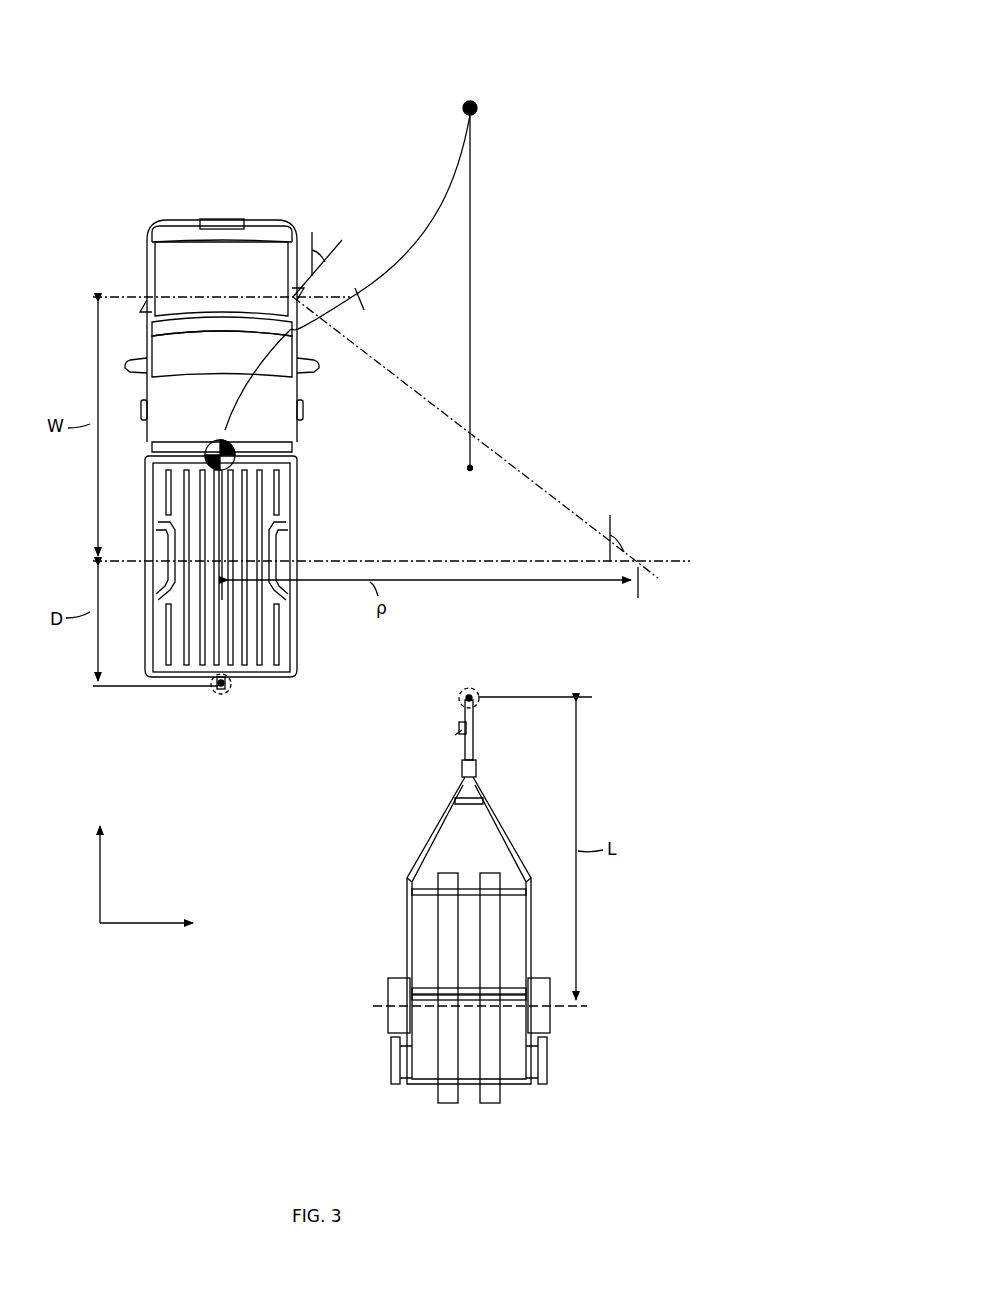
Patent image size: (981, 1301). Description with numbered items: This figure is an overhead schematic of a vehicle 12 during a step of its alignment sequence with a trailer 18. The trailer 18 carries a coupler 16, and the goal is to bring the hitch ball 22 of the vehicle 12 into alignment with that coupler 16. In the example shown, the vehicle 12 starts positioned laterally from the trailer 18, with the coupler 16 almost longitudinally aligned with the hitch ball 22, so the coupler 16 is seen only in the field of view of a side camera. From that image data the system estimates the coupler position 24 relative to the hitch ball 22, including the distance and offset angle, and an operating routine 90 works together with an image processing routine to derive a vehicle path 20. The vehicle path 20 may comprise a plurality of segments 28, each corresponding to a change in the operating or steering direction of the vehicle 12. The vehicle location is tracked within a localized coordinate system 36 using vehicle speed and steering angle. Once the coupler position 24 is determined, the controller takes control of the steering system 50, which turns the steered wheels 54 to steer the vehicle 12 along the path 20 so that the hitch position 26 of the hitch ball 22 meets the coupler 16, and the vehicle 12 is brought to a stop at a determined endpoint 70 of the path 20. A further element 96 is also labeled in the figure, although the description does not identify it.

The vehicle 12 is at (125, 223).
The coupler 16 is at (480, 703).
The trailer 18 is at (405, 926).
The vehicle path 20 is at (549, 58).
The hitch ball 22 is at (216, 688).
The coupler position 24 is at (480, 692).
The hitch position 26 is at (228, 694).
The segments 28 is at (420, 265).
The localized coordinate system 36 is at (148, 945).
The steering system 50 is at (318, 322).
The steered wheels 54 is at (138, 312).
The endpoint 70 is at (466, 470).
The operating routine 90 is at (462, 101).
The center of gravity 96 is at (210, 462).